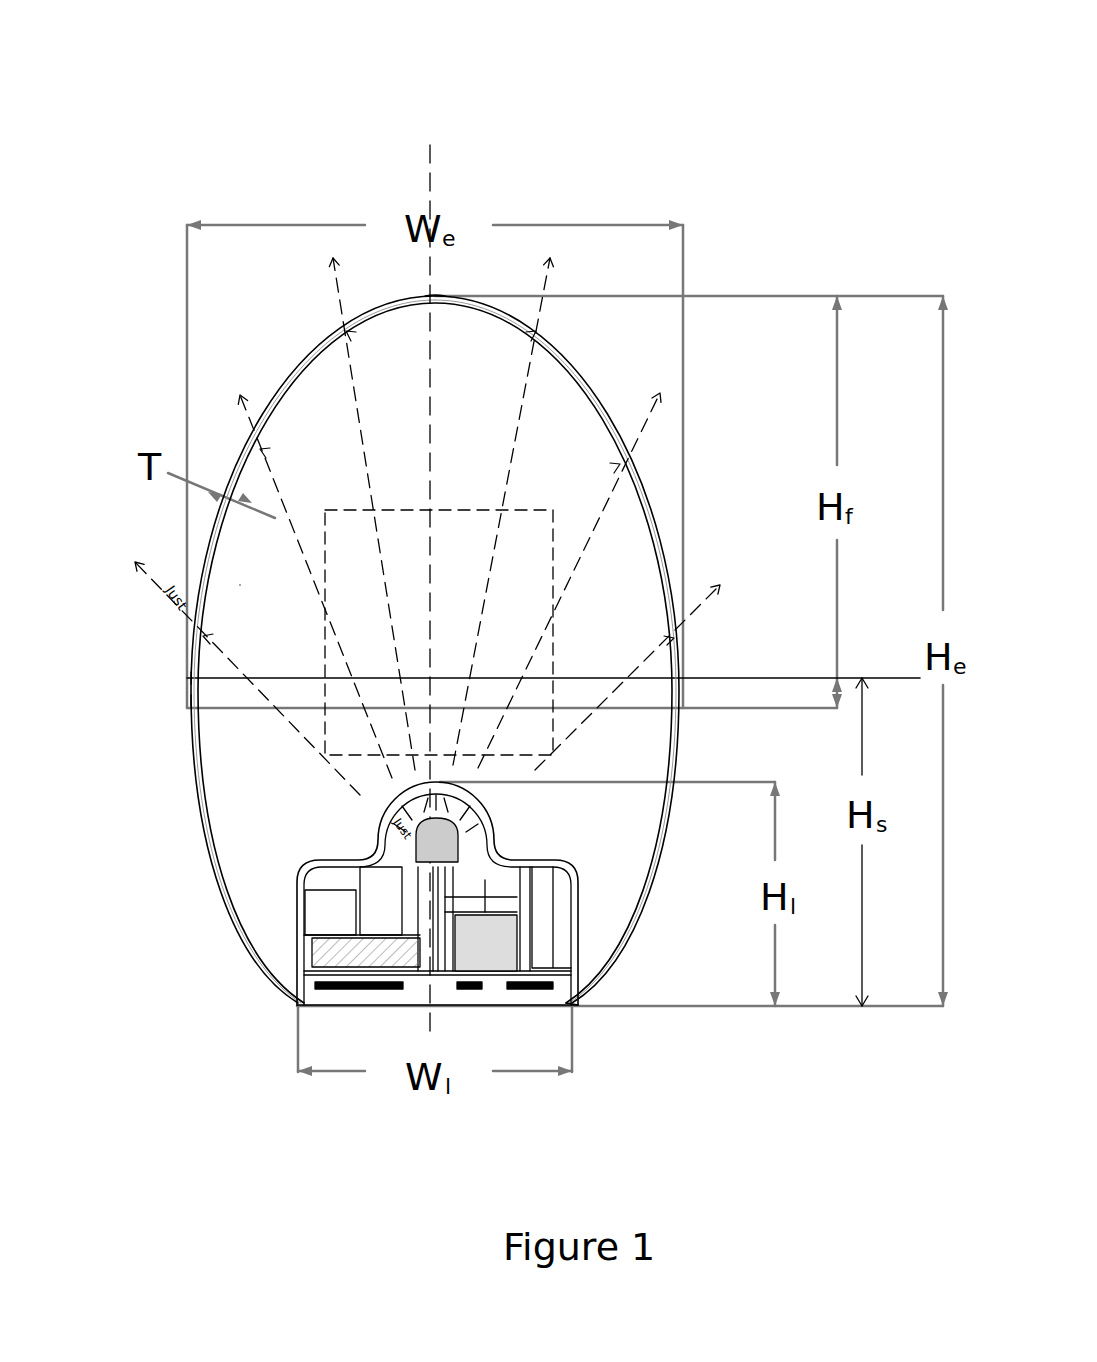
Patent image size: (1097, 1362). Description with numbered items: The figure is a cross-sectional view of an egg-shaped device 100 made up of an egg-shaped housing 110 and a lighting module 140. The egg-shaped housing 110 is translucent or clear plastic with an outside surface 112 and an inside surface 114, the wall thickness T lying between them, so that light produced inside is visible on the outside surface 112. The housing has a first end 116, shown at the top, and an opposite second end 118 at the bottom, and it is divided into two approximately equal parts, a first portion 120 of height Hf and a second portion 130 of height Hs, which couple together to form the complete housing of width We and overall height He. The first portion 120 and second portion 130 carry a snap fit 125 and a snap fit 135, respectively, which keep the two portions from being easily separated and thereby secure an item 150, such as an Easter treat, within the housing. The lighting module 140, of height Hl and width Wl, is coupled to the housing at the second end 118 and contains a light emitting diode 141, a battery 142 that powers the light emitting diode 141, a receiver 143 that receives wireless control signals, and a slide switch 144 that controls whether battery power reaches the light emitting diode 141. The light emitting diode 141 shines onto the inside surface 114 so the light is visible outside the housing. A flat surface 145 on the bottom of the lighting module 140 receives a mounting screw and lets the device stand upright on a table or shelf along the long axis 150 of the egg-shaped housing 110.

The egg-shaped device 100 is at (244, 58).
The egg-shaped housing 110 is at (320, 340).
The outside surface 112 is at (292, 377).
The inside surface 114 is at (277, 393).
The first end 116 is at (430, 292).
The second end 118 is at (583, 1005).
The first portion 120 is at (240, 585).
The snap fit 125 is at (186, 677).
The second portion 130 is at (233, 838).
The snap fit 135 is at (190, 698).
The lighting module 140 is at (297, 902).
The light emitting diode 141 is at (373, 813).
The battery 142 is at (362, 953).
The receiver 143 is at (380, 897).
The switch 144 is at (488, 945).
The flat surface 145 is at (440, 987).
The long axis 150 is at (475, 500).